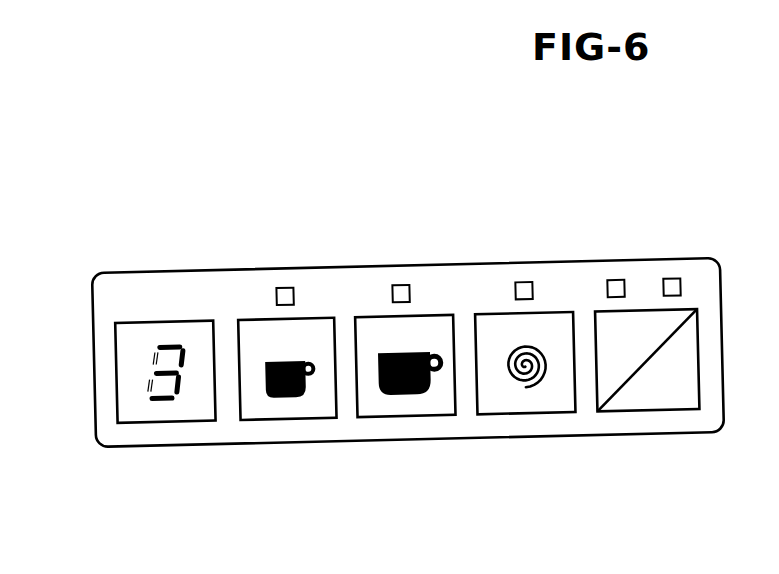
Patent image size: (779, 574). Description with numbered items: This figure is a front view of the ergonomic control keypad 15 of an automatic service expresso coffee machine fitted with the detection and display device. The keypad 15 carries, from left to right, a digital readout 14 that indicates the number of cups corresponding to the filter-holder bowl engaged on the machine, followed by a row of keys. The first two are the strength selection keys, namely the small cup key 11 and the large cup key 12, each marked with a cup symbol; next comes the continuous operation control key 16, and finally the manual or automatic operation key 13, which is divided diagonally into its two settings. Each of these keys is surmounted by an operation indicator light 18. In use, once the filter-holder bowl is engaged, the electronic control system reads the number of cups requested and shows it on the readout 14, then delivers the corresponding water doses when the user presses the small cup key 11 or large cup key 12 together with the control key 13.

The control keypad 15 is at (146, 281).
The digital readout 14 is at (148, 358).
The small cup key 11 is at (262, 328).
The large cup key 12 is at (382, 327).
The continuous operation control key 16 is at (495, 323).
The operation indicator light 18 is at (610, 280).
The manual or automatic operation key 13 is at (684, 358).